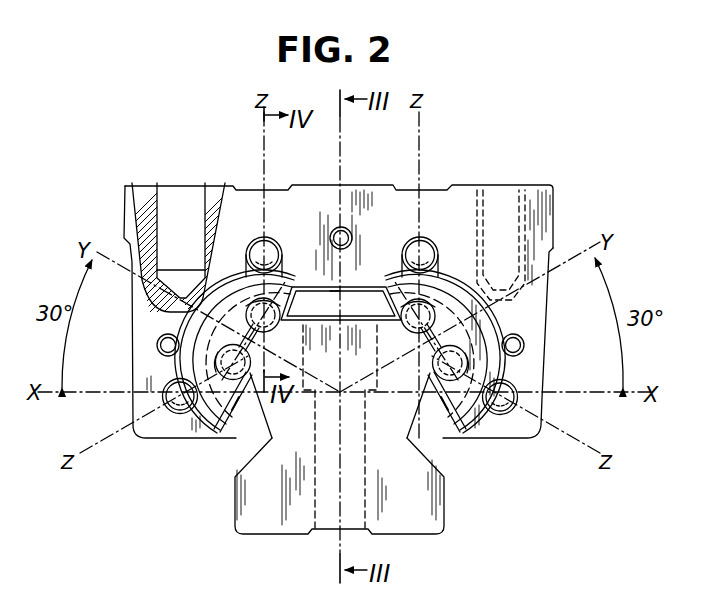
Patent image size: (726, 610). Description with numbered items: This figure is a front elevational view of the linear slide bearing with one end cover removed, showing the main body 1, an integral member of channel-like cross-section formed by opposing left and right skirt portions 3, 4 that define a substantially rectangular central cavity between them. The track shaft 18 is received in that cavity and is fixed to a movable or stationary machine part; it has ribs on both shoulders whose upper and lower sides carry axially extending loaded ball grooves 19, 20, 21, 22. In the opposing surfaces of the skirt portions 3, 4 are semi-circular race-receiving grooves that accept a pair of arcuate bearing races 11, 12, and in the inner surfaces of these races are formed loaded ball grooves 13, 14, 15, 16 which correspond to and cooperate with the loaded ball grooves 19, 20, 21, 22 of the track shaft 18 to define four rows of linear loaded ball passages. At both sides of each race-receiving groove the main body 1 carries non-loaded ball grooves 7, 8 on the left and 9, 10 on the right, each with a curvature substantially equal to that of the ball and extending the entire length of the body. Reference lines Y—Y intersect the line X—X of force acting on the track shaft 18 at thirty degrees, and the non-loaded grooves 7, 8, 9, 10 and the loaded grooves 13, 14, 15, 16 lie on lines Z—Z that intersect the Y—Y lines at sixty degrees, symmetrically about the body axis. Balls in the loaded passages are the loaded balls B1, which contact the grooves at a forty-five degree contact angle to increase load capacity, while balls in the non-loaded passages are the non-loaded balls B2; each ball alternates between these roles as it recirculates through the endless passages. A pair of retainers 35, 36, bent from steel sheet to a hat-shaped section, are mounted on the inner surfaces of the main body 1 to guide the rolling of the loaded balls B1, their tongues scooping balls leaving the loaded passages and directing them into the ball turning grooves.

The main body 1 is at (540, 184).
The left skirt portion 3 is at (132, 316).
The right skirt portion 4 is at (536, 338).
The non-loaded ball groove 7 is at (254, 243).
The non-loaded ball groove 8 is at (179, 414).
The non-loaded ball groove 9 is at (430, 244).
The non-loaded ball groove 10 is at (501, 418).
The bearing race 11 is at (212, 290).
The bearing race 12 is at (474, 294).
The loaded ball groove 13 is at (248, 306).
The loaded ball groove 14 is at (215, 364).
The loaded ball groove 15 is at (430, 296).
The loaded ball groove 16 is at (479, 375).
The track shaft 18 is at (264, 506).
The loaded ball groove 19 is at (310, 303).
The loaded ball groove 20 is at (265, 396).
The loaded ball groove 21 is at (333, 302).
The loaded ball groove 22 is at (364, 396).
The retainer 35 is at (242, 412).
The retainer 36 is at (443, 420).
The loaded balls B1 is at (318, 313).
The non-loaded balls B2 is at (337, 341).